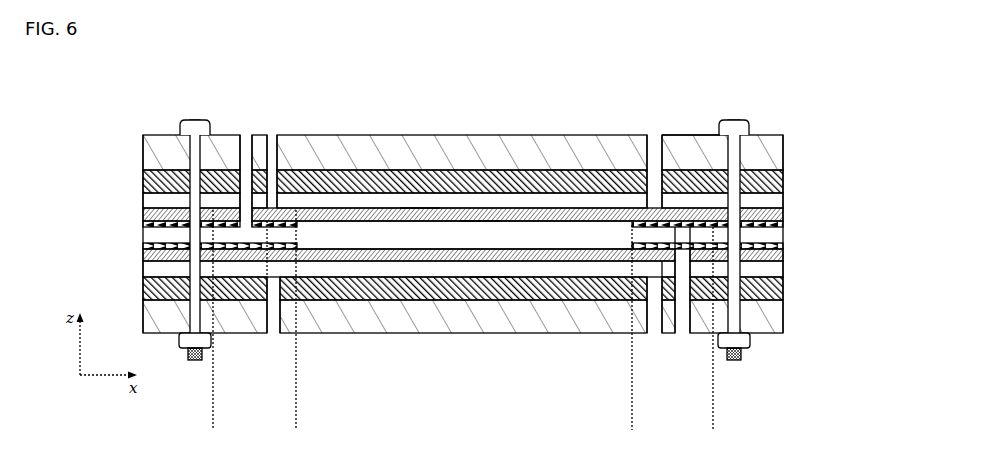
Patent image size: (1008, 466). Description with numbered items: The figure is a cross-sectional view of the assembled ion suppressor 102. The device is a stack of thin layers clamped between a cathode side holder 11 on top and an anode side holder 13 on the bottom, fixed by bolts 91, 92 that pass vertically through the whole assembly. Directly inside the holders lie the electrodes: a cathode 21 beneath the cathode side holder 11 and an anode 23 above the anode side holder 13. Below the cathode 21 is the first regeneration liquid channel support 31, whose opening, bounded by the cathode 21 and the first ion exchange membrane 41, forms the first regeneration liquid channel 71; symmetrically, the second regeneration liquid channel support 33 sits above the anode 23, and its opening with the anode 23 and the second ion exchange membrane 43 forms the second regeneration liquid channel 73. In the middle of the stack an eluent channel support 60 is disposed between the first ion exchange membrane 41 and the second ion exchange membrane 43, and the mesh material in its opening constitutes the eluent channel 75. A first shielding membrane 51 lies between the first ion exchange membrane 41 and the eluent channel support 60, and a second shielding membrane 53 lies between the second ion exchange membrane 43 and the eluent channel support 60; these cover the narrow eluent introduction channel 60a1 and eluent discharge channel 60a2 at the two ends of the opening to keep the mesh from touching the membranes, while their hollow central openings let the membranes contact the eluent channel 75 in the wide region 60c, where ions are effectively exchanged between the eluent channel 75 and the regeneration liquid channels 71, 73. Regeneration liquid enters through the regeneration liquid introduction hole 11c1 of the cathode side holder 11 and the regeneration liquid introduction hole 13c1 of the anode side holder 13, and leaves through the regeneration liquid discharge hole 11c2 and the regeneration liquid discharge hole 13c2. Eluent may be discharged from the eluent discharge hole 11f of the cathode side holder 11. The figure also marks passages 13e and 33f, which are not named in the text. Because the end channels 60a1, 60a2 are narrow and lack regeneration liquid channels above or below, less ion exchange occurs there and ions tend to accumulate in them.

The ion suppressor 102 is at (114, 134).
The cathode side holder 11 is at (783, 153).
The anode side holder 13 is at (783, 315).
The cathode 21 is at (783, 179).
The anode 23 is at (783, 290).
The first regeneration liquid channel support 31 is at (771, 202).
The second regeneration liquid channel support 33 is at (783, 270).
The first ion exchange membrane 41 is at (783, 217).
The second ion exchange membrane 43 is at (783, 256).
The first shielding membrane 51 is at (783, 224).
The second shielding membrane 53 is at (783, 247).
The eluent channel support 60 is at (783, 235).
The first regeneration liquid channel 71 is at (350, 99).
The second regeneration liquid channel 73 is at (427, 398).
The eluent channel 75 is at (547, 100).
The bolt 91 is at (190, 125).
The bolt 92 is at (733, 125).
The through hole 13e is at (245, 75).
The regeneration liquid discharge hole 11c2 is at (274, 82).
The regeneration liquid introduction hole 11c1 is at (652, 75).
The eluent discharge hole 11f is at (718, 116).
The regeneration liquid discharge hole 13c2 is at (274, 387).
The regeneration liquid introduction hole 13c1 is at (653, 395).
The flow passage of second electrode plate 33f is at (682, 337).
The eluent introduction channel 60a1 is at (296, 413).
The wide region 60c is at (632, 413).
The eluent discharge channel 60a2 is at (713, 413).